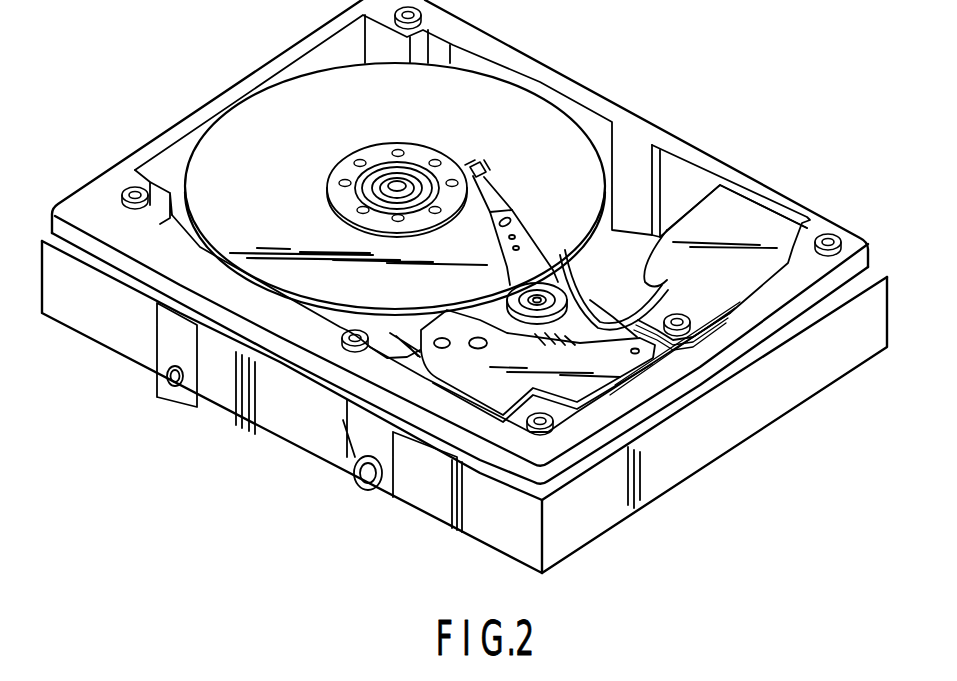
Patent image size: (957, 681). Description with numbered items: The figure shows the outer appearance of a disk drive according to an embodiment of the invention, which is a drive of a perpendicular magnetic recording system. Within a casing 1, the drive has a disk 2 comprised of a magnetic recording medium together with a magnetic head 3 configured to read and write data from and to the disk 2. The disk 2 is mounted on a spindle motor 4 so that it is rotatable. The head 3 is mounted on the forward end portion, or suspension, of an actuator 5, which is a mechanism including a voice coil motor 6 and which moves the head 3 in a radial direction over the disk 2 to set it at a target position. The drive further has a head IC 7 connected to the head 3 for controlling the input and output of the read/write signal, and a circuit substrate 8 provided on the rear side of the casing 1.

The casing 1 is at (720, 423).
The disk 2 is at (535, 100).
The magnetic head 3 is at (476, 165).
The spindle motor 4 is at (381, 152).
The actuator 5 is at (532, 247).
The voice coil motor 6 is at (603, 377).
The head IC 7 is at (730, 288).
The circuit substrate 8 is at (436, 505).